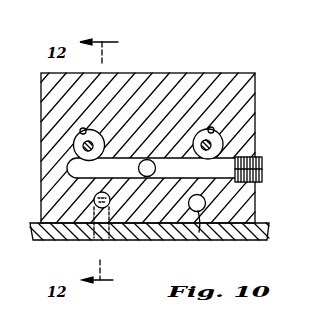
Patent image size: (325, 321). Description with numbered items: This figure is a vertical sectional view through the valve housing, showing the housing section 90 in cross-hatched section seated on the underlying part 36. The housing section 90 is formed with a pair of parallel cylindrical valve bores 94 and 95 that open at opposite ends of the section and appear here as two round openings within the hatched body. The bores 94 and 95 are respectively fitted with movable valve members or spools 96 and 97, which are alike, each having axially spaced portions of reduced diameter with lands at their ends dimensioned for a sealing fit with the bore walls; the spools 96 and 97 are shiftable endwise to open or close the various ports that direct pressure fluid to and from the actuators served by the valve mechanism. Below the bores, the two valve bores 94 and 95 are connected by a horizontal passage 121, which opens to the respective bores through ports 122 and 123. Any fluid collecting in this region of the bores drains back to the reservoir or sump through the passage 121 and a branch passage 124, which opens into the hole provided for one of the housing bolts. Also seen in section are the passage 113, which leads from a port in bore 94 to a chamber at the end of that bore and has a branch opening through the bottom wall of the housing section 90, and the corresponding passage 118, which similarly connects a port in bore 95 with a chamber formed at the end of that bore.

The housing section 90 is at (178, 83).
The base plate 36 is at (34, 241).
The port 122 is at (70, 166).
The branch passage 124 is at (154, 176).
The valve spool 96 is at (76, 146).
The valve bore 94 is at (80, 131).
The valve spool 97 is at (226, 139).
The valve bore 95 is at (213, 129).
The port 123 is at (262, 160).
The passage 113 is at (92, 243).
The passage 121 is at (171, 173).
The passage 118 is at (199, 232).